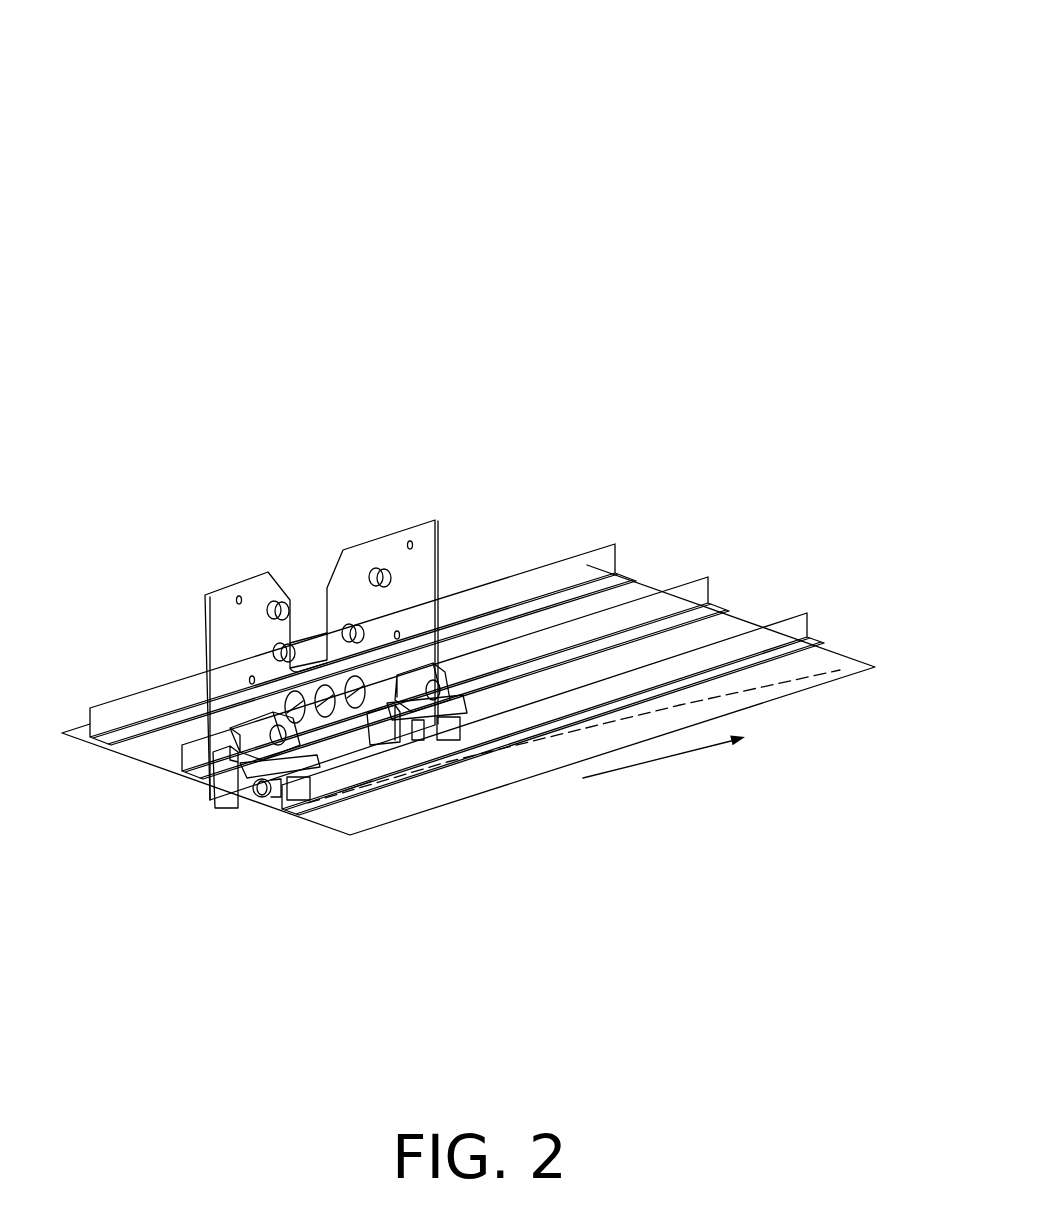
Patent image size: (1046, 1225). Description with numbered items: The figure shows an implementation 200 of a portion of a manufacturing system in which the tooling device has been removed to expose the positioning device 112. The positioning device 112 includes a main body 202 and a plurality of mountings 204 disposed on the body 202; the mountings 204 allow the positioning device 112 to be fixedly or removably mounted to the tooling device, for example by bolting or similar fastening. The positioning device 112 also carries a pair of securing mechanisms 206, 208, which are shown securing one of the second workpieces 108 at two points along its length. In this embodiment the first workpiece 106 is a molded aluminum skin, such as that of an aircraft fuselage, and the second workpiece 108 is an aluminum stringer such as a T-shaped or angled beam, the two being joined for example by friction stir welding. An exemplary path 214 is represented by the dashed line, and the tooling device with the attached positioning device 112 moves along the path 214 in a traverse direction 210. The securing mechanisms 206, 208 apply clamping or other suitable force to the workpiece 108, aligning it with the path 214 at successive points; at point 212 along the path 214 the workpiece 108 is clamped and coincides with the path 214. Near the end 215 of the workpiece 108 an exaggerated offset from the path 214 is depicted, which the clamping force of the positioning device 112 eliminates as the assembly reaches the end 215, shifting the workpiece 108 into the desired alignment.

The implementation 200 is at (720, 70).
The first workpiece 106 is at (547, 780).
The second workpiece 108 is at (813, 627).
The positioning device 112 is at (252, 565).
The main body 202 is at (228, 635).
The mountings 204 is at (395, 565).
The securing mechanism 206 is at (300, 780).
The securing mechanism 208 is at (445, 722).
The traverse direction 210 is at (692, 789).
The point 212 is at (357, 783).
The path 214 is at (820, 677).
The end 215 is at (768, 588).